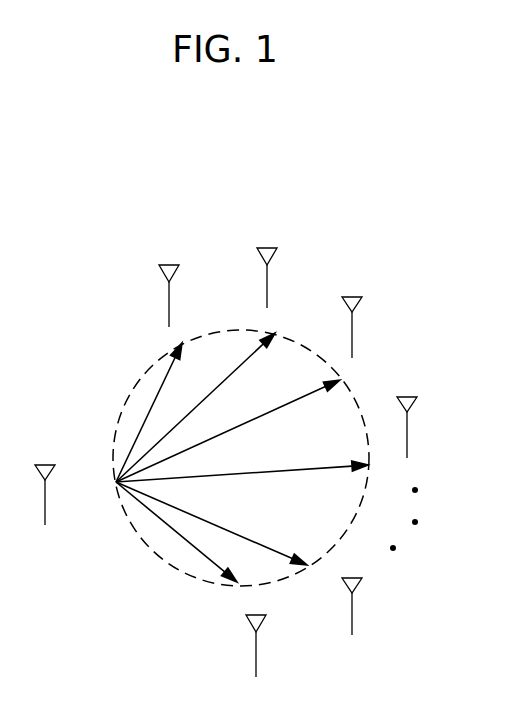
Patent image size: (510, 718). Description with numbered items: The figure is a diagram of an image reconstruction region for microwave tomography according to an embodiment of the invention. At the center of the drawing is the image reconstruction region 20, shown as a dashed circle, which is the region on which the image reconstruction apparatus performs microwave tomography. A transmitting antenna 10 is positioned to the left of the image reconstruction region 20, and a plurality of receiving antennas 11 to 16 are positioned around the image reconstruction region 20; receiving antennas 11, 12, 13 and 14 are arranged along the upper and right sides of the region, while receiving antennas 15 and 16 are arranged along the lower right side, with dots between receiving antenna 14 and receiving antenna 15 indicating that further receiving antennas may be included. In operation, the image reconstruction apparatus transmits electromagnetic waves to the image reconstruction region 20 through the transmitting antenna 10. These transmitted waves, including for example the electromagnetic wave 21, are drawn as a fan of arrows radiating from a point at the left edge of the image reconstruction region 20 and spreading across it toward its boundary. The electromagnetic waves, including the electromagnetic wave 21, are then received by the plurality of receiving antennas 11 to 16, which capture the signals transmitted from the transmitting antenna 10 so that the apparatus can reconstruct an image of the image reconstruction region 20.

The transmitting antenna 10 is at (45, 463).
The receiving antenna 11 is at (170, 263).
The receiving antenna 12 is at (268, 246).
The receiving antenna 13 is at (353, 295).
The receiving antenna 14 is at (408, 395).
The receiving antenna 15 is at (358, 598).
The receiving antenna 16 is at (262, 640).
The image reconstruction region 20 is at (180, 570).
The electromagnetic wave 21 is at (167, 527).